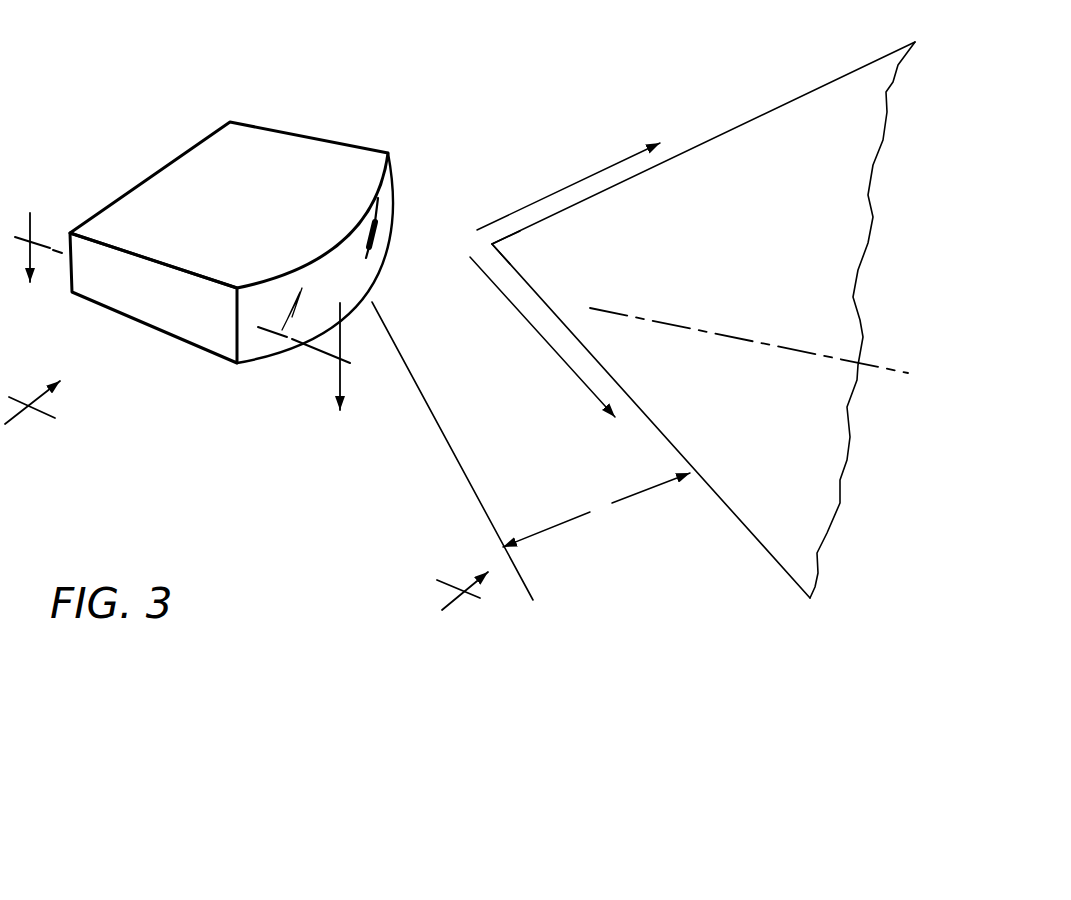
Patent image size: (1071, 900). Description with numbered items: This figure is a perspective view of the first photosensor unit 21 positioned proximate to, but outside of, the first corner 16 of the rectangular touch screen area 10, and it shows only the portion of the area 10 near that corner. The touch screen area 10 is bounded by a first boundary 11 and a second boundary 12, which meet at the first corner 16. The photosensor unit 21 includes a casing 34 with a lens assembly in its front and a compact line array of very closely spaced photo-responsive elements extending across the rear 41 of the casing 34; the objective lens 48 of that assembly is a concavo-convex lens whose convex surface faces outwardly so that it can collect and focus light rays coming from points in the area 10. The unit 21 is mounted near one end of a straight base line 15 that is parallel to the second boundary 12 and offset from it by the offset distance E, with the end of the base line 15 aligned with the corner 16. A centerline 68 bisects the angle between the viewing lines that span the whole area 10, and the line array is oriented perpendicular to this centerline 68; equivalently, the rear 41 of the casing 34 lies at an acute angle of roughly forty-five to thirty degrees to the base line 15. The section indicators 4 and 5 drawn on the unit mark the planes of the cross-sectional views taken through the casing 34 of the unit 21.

The touch screen area 10 is at (698, 320).
The first boundary 11 is at (770, 111).
The second boundary 12 is at (740, 518).
The base line 15 is at (455, 437).
The first corner 16 is at (500, 245).
The first photosensor unit 21 is at (273, 225).
The casing 34 is at (297, 160).
The rear of casing 41 is at (117, 197).
The objective lens 48 is at (383, 217).
The centerline 68 is at (732, 333).
The section line 4- 4 is at (246, 509).
The section line 5- 5 is at (182, 296).